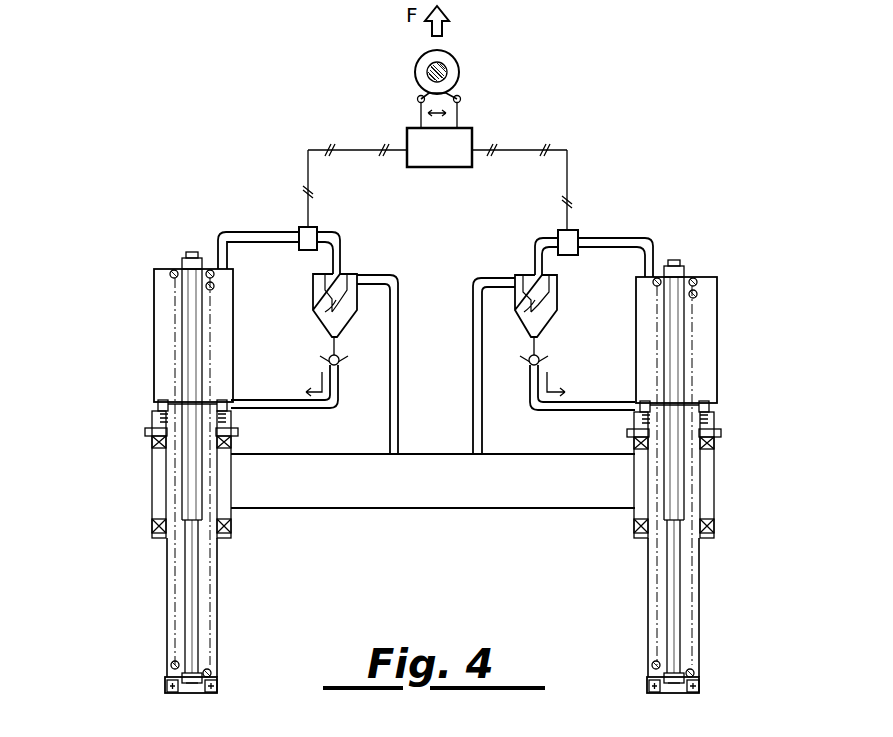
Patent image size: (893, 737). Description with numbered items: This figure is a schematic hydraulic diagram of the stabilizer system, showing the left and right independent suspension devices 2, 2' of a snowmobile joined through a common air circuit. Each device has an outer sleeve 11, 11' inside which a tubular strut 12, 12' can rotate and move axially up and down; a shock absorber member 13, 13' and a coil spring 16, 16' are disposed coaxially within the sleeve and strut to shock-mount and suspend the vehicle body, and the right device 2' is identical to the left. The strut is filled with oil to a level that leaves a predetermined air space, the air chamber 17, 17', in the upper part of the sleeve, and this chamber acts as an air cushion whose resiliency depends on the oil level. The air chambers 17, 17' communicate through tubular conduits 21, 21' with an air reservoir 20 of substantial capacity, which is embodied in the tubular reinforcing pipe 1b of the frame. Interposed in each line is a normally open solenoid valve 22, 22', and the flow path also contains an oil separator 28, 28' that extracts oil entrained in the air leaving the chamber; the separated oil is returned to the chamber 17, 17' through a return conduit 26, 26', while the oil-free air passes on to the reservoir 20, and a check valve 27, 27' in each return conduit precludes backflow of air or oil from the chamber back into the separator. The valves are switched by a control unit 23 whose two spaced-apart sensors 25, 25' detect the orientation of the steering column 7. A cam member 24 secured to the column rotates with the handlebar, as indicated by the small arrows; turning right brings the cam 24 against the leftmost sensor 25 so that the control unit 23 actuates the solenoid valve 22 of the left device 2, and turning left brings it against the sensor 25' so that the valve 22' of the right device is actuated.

The tubular reinforcing pipe 1b is at (371, 509).
The independent suspension device 2 is at (141, 472).
The independent suspension device 2' is at (719, 476).
The steering column 7 is at (447, 71).
The outer sleeve 11 is at (153, 386).
The outer sleeve 11' is at (720, 390).
The tubular strut 12 is at (150, 598).
The tubular strut 12' is at (713, 598).
The shock absorber member 13 is at (156, 474).
The shock absorber member 13' is at (718, 475).
The coil spring 16 is at (149, 666).
The coil spring 16' is at (716, 671).
The air chamber 17 is at (142, 471).
The air chamber 17' is at (732, 475).
The air reservoir 20 is at (444, 496).
The tubular conduit 21 is at (317, 323).
The tubular conduit 21' is at (562, 327).
The solenoid valve 22 is at (278, 206).
The solenoid valve 22' is at (601, 214).
The control unit 23 is at (439, 170).
The cam member 24 is at (428, 106).
The sensor 25 is at (387, 98).
The sensor 25' is at (501, 100).
The return conduit 26 is at (287, 406).
The return conduit 26' is at (580, 408).
The check valve 27 is at (348, 378).
The check valve 27' is at (520, 379).
The oil separator 28 is at (306, 305).
The oil separator 28' is at (565, 306).